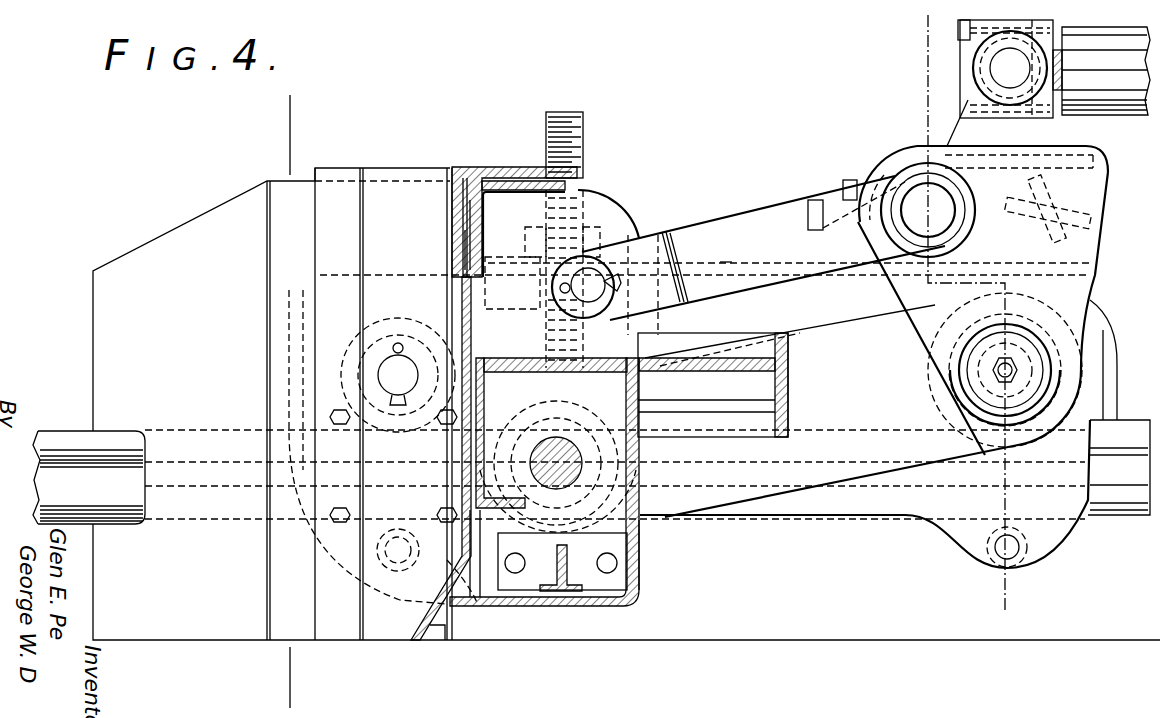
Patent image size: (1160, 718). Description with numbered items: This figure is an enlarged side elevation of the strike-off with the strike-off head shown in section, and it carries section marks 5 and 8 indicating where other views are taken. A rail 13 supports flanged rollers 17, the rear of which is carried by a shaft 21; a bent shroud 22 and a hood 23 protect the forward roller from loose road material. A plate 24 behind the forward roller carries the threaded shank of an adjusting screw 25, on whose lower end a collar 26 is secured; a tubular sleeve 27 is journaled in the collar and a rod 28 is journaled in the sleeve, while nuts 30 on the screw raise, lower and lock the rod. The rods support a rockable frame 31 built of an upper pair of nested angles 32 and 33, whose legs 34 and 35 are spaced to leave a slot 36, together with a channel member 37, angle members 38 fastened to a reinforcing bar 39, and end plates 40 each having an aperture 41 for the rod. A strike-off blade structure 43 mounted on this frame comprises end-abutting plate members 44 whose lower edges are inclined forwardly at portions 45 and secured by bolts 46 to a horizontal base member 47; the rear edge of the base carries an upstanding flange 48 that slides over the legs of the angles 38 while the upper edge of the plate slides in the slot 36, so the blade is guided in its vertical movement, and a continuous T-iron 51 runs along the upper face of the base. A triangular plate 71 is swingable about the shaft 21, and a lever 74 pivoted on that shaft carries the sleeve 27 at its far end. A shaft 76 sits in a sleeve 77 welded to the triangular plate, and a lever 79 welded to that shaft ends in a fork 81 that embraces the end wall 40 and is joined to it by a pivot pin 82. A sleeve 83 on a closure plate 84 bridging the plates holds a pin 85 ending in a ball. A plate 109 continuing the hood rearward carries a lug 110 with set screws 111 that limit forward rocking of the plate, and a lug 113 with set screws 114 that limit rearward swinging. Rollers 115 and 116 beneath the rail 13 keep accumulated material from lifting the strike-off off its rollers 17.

The section line 5- 5 is at (308, 682).
The section line 8- 8 is at (1025, 598).
The rail 13 is at (48, 437).
The flanged roller 17 is at (930, 385).
The shaft 21 is at (1030, 358).
The bent plate or shroud 22 is at (228, 341).
The hood 23 is at (312, 325).
The plate 24 is at (506, 268).
The adjusting screw 25 is at (585, 135).
The collar 26 is at (555, 377).
The tubular sleeve 27 is at (558, 462).
The rod 28 is at (575, 448).
The nut 30 is at (546, 236).
The frame 31 is at (638, 211).
The angle member 32 is at (540, 166).
The angle member 33 is at (523, 229).
The leg 34 is at (462, 225).
The leg 35 is at (490, 229).
The slot 36 is at (465, 209).
The channel member 37 is at (482, 408).
The angle member 38 is at (645, 455).
The reinforcing bar 39 is at (790, 388).
The end plate 40 is at (600, 206).
The aperture 41 is at (568, 452).
The strike-off blade structure 43 is at (475, 324).
The plate member 44 is at (465, 352).
The inclined portion 45 is at (455, 572).
The bolt 46 is at (428, 618).
The base member 47 is at (518, 607).
The flange 48 is at (655, 542).
The T-iron 51 is at (572, 592).
The triangular plate 71 is at (1105, 262).
The lever 74 is at (790, 336).
The shaft 76 is at (925, 192).
The sleeve 77 is at (892, 176).
The lever 79 is at (730, 210).
The fork 81 is at (641, 237).
The pivot pin 82 is at (604, 322).
The sleeve 83 is at (1052, 135).
The plate or closure 84 is at (1092, 150).
The pin 85 is at (1012, 68).
The plate 109 is at (724, 262).
The lug 110 is at (850, 180).
The set screw 111 is at (825, 230).
The lug 113 is at (1050, 192).
The set screw 114 is at (1035, 235).
The roller 115 is at (420, 540).
The roller 116 is at (1025, 538).